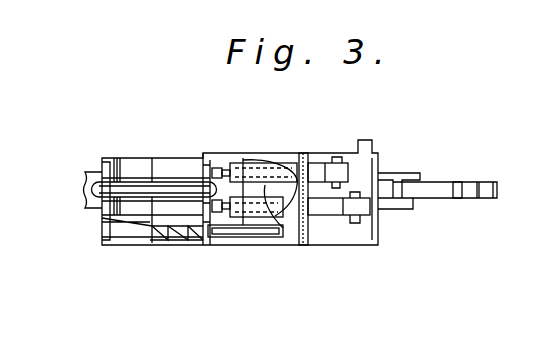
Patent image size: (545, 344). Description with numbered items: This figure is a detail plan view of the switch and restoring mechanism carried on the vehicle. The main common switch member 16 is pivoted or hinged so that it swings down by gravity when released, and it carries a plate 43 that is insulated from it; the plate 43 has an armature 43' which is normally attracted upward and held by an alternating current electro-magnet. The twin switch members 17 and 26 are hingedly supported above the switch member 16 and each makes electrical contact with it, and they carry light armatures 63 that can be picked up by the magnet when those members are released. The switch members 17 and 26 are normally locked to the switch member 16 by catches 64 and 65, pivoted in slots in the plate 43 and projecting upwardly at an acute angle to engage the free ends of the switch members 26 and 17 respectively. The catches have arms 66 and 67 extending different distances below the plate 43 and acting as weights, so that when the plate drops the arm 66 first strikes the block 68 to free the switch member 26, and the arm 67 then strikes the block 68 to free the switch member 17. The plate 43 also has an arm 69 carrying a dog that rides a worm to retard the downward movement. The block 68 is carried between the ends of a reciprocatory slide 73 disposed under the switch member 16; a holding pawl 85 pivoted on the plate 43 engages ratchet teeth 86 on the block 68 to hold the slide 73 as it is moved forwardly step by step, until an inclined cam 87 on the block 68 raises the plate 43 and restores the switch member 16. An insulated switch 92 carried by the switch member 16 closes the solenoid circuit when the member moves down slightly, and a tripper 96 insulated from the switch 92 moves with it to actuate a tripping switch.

The switch member 16 is at (378, 230).
The switch member 17 is at (315, 162).
The switch member 26 is at (360, 192).
The plate 43 is at (153, 269).
The armature 43' is at (254, 143).
The armatures 63 is at (297, 225).
The catch 64 is at (193, 237).
The catch 65 is at (206, 156).
The arm 66 is at (268, 235).
The arm 67 is at (255, 160).
The block 68 is at (160, 165).
The arm 69 is at (98, 170).
The slide 73 is at (88, 208).
The holding pawl 85 is at (240, 232).
The ratchet teeth 86 is at (162, 230).
The inclined cam 87 is at (126, 167).
The switch 92 is at (432, 185).
The tripper 96 is at (484, 205).